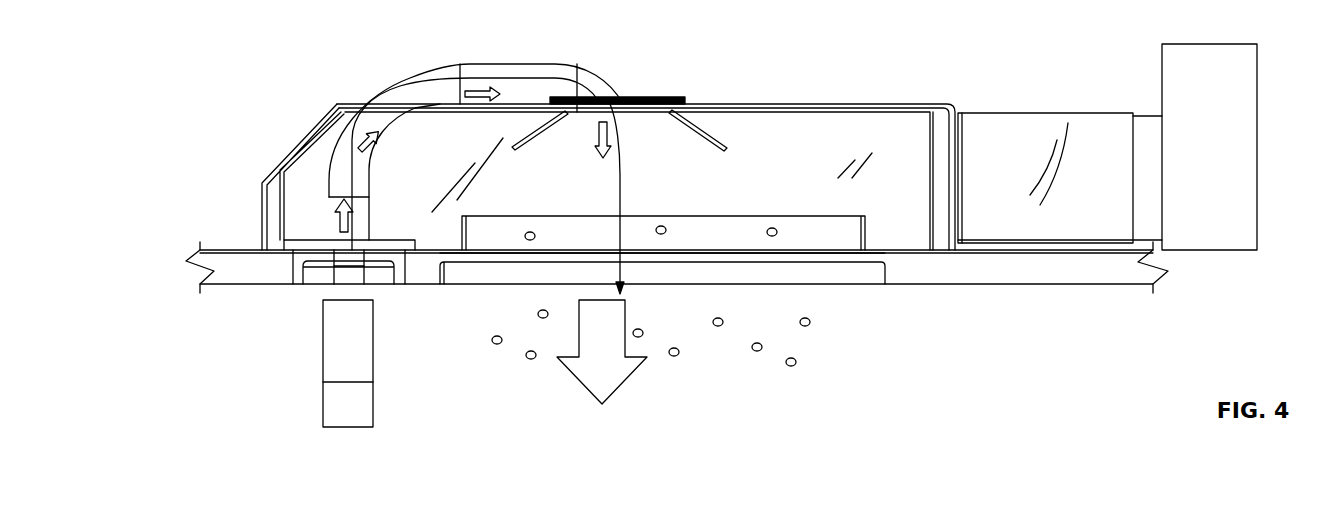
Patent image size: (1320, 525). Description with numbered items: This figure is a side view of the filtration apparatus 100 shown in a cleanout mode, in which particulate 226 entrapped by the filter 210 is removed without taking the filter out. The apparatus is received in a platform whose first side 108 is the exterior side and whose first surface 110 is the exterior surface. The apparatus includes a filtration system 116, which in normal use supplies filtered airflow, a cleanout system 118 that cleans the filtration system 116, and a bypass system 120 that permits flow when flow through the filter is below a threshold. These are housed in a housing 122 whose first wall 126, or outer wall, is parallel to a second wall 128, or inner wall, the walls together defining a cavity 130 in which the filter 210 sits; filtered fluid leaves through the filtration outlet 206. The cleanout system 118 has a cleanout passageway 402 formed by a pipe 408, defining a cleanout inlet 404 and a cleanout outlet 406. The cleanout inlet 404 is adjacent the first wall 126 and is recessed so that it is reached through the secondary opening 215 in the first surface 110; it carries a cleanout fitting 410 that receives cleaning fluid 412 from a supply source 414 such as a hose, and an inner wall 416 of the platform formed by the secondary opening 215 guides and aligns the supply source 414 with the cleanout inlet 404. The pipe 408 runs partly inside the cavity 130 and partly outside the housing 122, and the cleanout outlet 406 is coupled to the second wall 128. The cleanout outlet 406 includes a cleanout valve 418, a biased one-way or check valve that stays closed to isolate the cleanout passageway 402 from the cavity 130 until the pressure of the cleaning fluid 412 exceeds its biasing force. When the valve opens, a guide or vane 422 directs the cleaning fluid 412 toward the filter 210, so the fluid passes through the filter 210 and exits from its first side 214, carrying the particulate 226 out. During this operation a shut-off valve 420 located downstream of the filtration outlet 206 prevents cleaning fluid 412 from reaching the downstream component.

The filtration apparatus 100 is at (257, 27).
The first side 108 is at (985, 374).
The first surface 110 is at (1075, 287).
The filtration system 116 is at (729, 196).
The cleanout system 118 is at (476, 156).
The bypass system 120 is at (296, 215).
The housing 122 is at (318, 124).
The first wall 126 is at (917, 253).
The second wall 128 is at (890, 104).
The cavity 130 is at (879, 187).
The filtration outlet 206 is at (1005, 113).
The filter 210 is at (835, 233).
The first side 214 is at (755, 216).
The secondary opening 215 is at (293, 267).
The particulate 226 is at (531, 359).
The cleanout passageway 402 is at (558, 80).
The cleanout inlet 404 is at (350, 290).
The cleanout outlet 406 is at (663, 97).
The pipe 408 is at (545, 62).
The cleanout fitting 410 is at (338, 277).
The cleaning fluid 412 is at (336, 218).
The supply source 414 is at (335, 360).
The inner wall 416 is at (398, 280).
The cleanout valve 418 is at (522, 145).
The shut-off valve 420 is at (1162, 70).
The guide or vane 422 is at (712, 142).